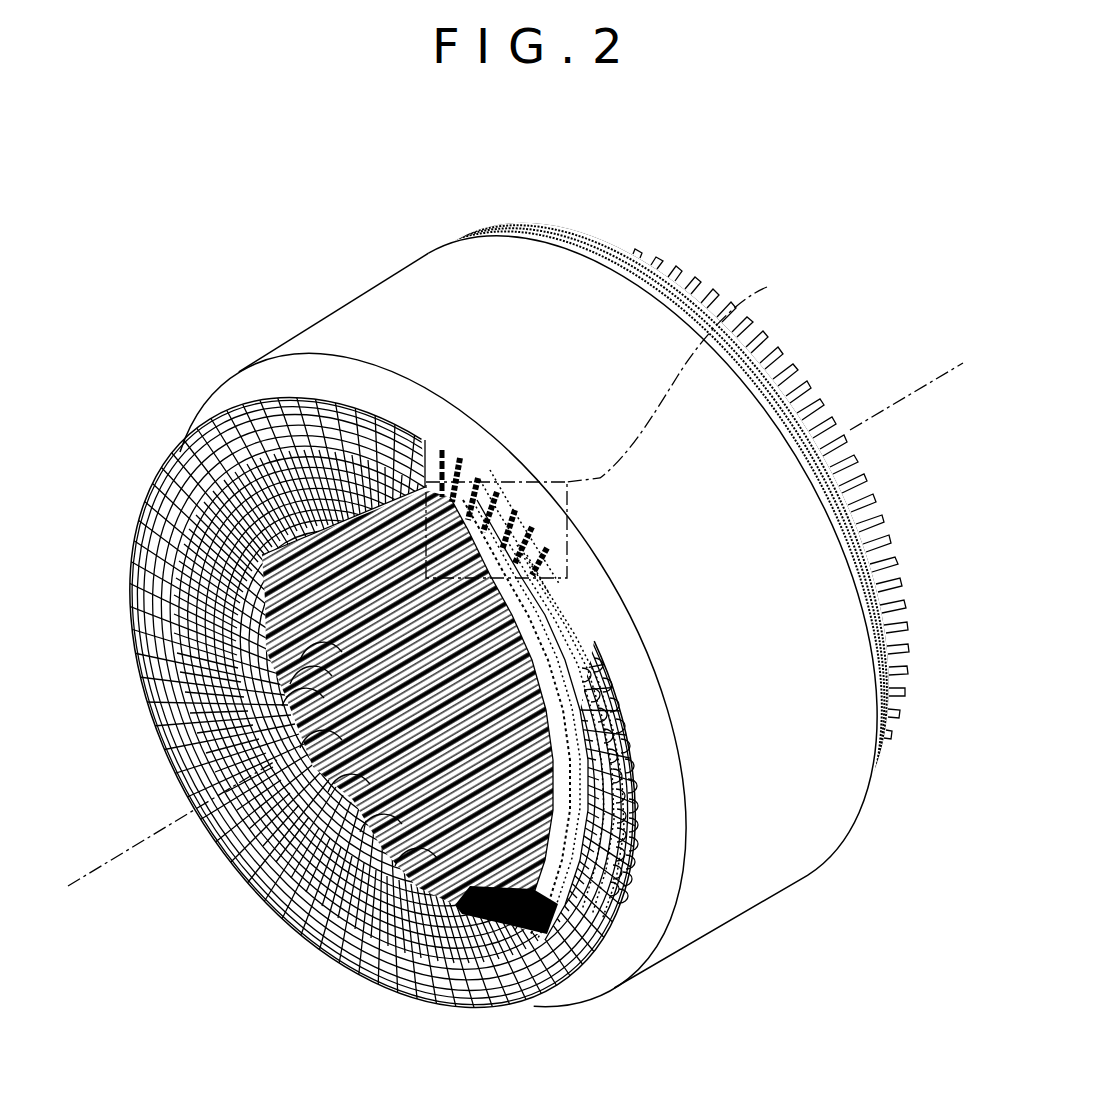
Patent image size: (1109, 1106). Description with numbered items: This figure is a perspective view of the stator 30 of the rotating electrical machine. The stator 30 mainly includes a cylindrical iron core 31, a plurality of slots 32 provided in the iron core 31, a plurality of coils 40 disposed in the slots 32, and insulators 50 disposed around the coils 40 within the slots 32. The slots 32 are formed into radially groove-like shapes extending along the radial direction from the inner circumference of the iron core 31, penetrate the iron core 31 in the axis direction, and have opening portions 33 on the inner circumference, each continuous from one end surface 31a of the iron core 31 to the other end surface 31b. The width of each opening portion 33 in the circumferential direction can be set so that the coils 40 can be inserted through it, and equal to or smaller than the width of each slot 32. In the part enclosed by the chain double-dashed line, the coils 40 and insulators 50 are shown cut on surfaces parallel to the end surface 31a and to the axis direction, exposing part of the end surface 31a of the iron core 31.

The stator 30 is at (305, 264).
The iron core 31 is at (487, 273).
The end surface 31a is at (260, 393).
The other end surface 31b is at (877, 782).
The slots 32 is at (466, 472).
The opening portions 33 is at (308, 700).
The coils 40 is at (157, 490).
The insulators 50 is at (443, 450).